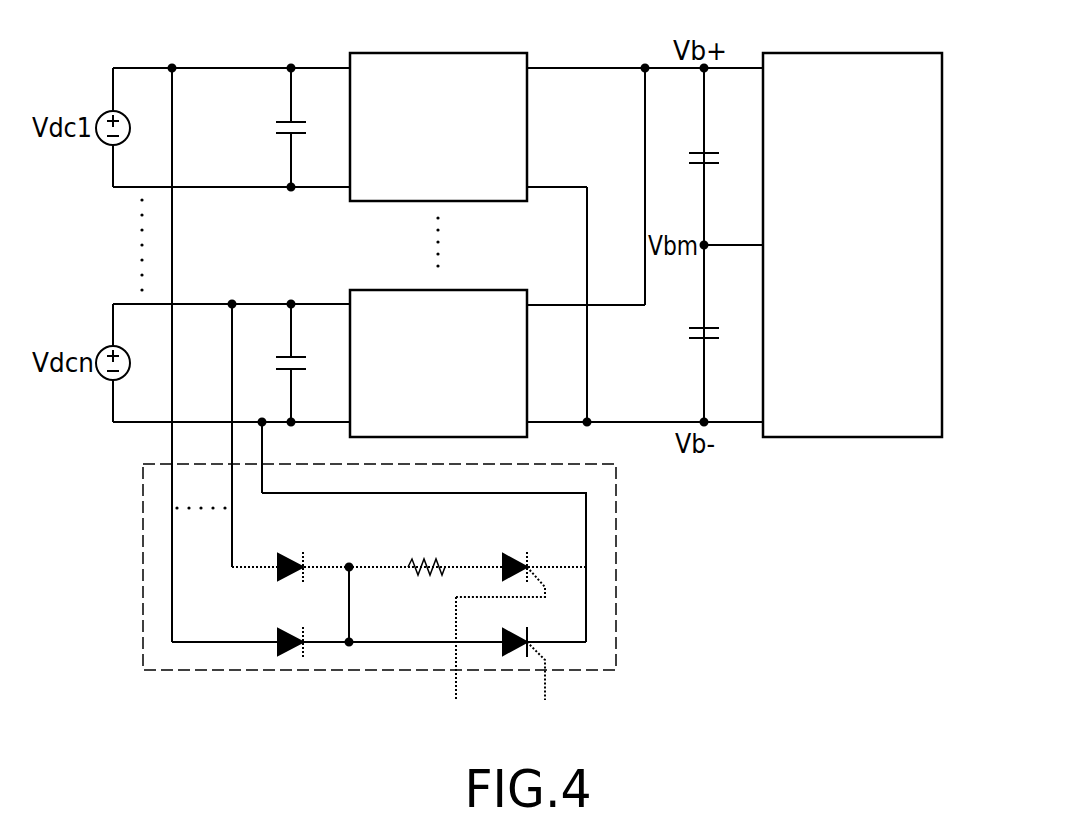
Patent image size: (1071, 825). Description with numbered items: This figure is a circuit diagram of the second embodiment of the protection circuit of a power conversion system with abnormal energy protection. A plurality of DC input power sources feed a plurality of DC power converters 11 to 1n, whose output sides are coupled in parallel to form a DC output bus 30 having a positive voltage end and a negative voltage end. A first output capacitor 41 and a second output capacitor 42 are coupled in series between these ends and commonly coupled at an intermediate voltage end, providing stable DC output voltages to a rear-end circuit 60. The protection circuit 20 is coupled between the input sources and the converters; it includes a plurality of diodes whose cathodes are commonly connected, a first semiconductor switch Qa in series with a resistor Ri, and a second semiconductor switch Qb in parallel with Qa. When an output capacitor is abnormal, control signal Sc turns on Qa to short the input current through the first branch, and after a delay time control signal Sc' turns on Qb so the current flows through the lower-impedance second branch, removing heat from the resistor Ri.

The DC power converter 11 is at (438, 58).
The DC power converter 1n is at (450, 297).
The DC output bus 30 is at (756, 213).
The first output capacitor 41 is at (710, 147).
The second output capacitor 42 is at (710, 322).
The rear-end circuit 60 is at (852, 60).
The protection circuit 20 is at (610, 567).